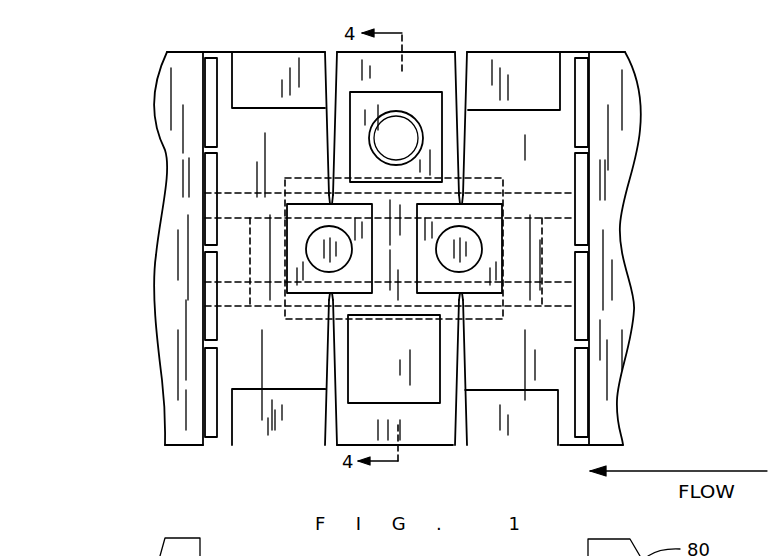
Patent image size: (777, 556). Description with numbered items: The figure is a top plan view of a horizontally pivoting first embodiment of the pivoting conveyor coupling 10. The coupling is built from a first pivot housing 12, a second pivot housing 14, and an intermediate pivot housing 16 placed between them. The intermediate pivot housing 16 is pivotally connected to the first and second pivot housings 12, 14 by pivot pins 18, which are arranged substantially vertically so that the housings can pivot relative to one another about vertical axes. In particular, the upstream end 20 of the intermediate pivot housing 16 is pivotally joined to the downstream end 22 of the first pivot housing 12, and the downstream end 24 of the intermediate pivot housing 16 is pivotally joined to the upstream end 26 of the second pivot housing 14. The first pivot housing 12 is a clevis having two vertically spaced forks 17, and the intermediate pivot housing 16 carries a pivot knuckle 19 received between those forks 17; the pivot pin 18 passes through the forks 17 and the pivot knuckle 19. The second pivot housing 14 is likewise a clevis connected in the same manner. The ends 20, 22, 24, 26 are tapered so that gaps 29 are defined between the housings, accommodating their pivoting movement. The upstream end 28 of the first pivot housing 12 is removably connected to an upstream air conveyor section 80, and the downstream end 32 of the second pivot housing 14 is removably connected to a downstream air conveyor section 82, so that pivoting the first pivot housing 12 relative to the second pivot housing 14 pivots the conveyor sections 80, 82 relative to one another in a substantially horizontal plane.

The pivoting conveyor coupling 10 is at (142, 135).
The first pivot housing 12 is at (567, 60).
The second pivot housing 14 is at (226, 60).
The intermediate pivot housing 16 is at (435, 73).
The forks 17 is at (332, 182).
The pivot pins 18 is at (320, 262).
The pivot knuckle 19 is at (306, 204).
The upstream end of the intermediate pivot housing 20 is at (457, 102).
The downstream end of the first pivot housing 22 is at (461, 52).
The downstream end of the intermediate pivot housing 24 is at (327, 128).
The upstream end of the second pivot housing 26 is at (331, 52).
The upstream end of the first pivot housing 28 is at (589, 152).
The gaps 29 is at (329, 415).
The downstream end of the second pivot housing 32 is at (203, 327).
The upstream air conveyor section 80 is at (614, 62).
The downstream air conveyor section 82 is at (180, 62).